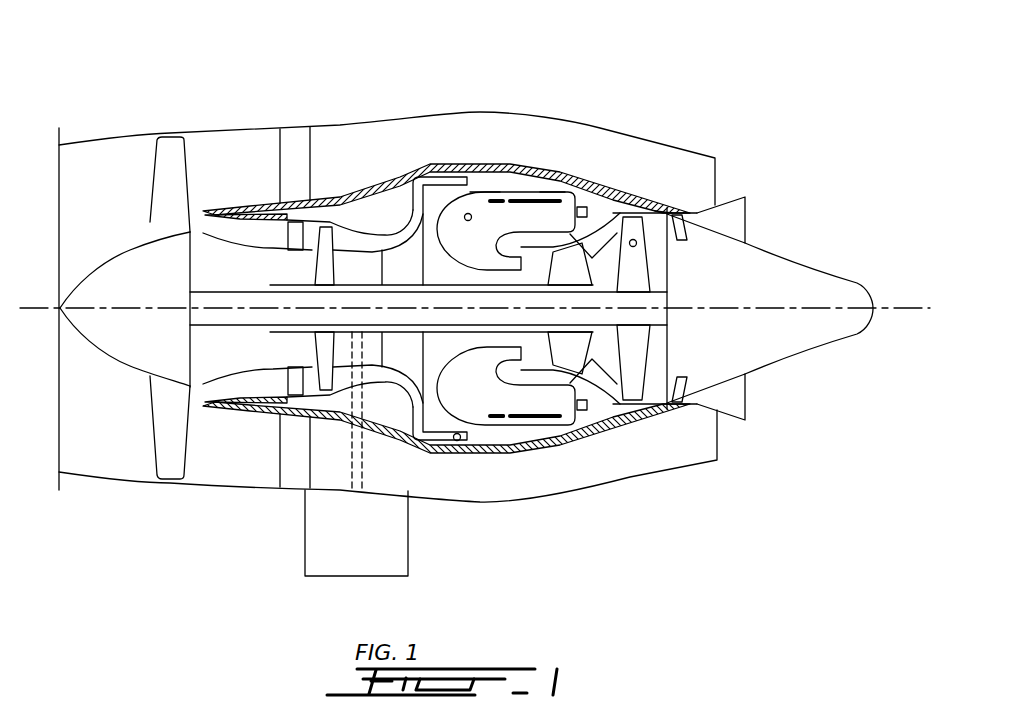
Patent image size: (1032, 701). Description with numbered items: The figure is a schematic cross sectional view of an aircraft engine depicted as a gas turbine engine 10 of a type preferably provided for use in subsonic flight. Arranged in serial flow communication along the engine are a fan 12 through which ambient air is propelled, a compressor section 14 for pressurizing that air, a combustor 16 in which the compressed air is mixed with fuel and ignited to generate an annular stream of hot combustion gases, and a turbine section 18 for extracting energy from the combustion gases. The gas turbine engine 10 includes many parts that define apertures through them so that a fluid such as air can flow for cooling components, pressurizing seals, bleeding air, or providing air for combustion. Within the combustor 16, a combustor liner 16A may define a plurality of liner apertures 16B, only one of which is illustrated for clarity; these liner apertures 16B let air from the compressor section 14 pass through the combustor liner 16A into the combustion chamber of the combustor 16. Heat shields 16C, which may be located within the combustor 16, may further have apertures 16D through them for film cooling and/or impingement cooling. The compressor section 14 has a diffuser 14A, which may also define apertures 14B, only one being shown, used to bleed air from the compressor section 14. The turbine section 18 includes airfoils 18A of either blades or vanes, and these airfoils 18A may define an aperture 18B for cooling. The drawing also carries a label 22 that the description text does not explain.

The gas turbine engine 10 is at (638, 110).
The fan 12 is at (166, 418).
The compressor section 14 is at (368, 247).
The diffuser 14A is at (445, 442).
The apertures 14B is at (457, 441).
The combustor 16 is at (507, 201).
The combustor liner 16A is at (485, 191).
The liner apertures 16B is at (466, 214).
The heat shields 16C is at (542, 420).
The apertures 16D is at (507, 418).
The turbine section 18 is at (603, 357).
The airfoils 18A is at (663, 215).
The aperture 18B is at (637, 243).
The combustor casing 22 is at (550, 191).